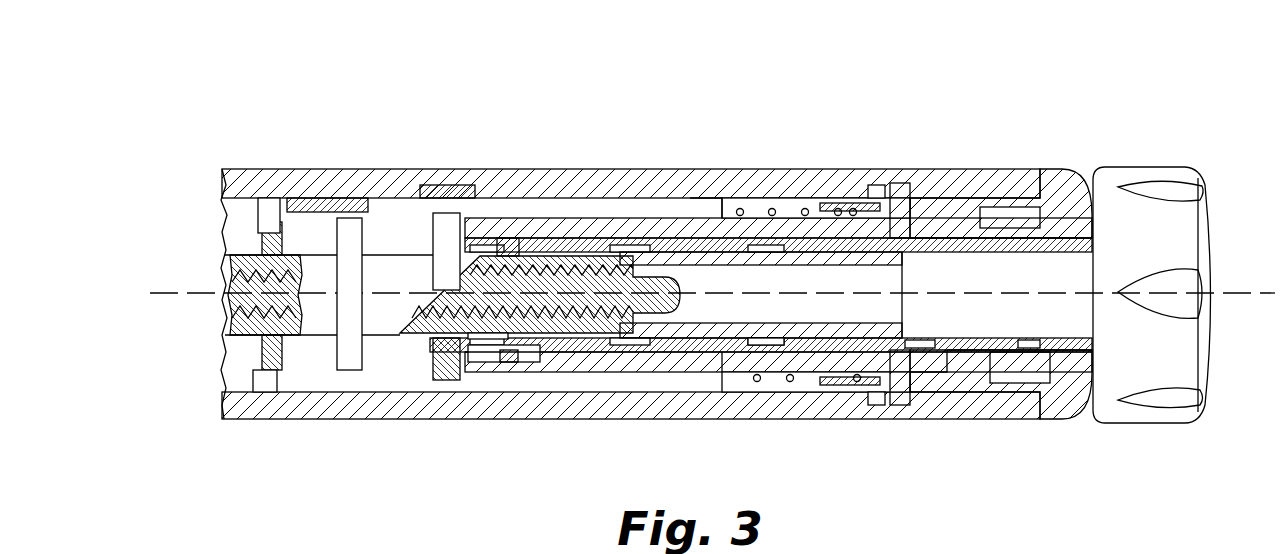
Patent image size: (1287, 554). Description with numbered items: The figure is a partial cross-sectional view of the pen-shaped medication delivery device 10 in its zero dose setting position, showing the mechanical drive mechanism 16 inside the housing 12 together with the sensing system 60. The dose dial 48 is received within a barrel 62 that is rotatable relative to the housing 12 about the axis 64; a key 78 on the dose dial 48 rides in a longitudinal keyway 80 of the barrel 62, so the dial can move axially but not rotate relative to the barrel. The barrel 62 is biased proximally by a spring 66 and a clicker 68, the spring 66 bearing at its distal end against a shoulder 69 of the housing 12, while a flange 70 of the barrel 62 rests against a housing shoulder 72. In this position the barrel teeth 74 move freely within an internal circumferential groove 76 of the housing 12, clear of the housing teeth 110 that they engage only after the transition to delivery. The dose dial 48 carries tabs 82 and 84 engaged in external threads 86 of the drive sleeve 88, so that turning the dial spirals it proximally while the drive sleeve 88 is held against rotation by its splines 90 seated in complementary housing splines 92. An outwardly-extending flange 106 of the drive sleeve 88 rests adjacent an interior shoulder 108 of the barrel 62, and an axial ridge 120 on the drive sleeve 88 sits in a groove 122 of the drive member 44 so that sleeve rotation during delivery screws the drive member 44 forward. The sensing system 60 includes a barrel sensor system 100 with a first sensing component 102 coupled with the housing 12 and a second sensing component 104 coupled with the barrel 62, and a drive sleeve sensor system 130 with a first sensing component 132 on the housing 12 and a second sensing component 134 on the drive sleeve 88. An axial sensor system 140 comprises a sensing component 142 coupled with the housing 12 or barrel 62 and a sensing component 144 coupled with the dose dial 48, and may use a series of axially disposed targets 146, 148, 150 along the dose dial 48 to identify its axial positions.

The medication delivery device 10 is at (1052, 98).
The housing 12 is at (606, 168).
The mechanical drive mechanism 16 is at (812, 460).
The drive member 44 is at (253, 302).
The dose dial 48 is at (997, 392).
The sensing system 60 is at (690, 108).
The barrel 62 is at (660, 226).
The axis 64 is at (1232, 296).
The spring 66 is at (760, 373).
The clicker 68 is at (880, 405).
The shoulder 69 is at (706, 380).
The flange 70 is at (932, 386).
The shoulder 72 is at (906, 398).
The teeth 74 is at (893, 184).
The internal circumferential groove 76 is at (904, 186).
The key 78 is at (536, 348).
The longitudinal keyway 80 is at (605, 360).
The tab 82 is at (510, 345).
The tab 84 is at (504, 258).
The external threads 86 is at (540, 250).
The drive sleeve 88 is at (385, 320).
The splines 90 is at (268, 245).
The splines 92 is at (263, 204).
The barrel sensor system 100 is at (474, 126).
The first sensing component 102 is at (455, 184).
The second sensing component 104 is at (437, 222).
The outwardly-extending flange 106 is at (435, 376).
The interior shoulder 108 is at (495, 355).
The housing teeth 110 is at (878, 195).
The axial ridge 120 is at (690, 262).
The groove 122 is at (692, 222).
The drive sleeve sensor system 130 is at (326, 357).
The first sensing component 132 is at (300, 197).
The second sensing component 134 is at (381, 216).
The axial sensor system 140 is at (1054, 152).
The sensing component 142 is at (1010, 205).
The sensing component 144 is at (1030, 368).
The target 146 is at (1020, 345).
The target 148 is at (926, 334).
The target 150 is at (757, 345).